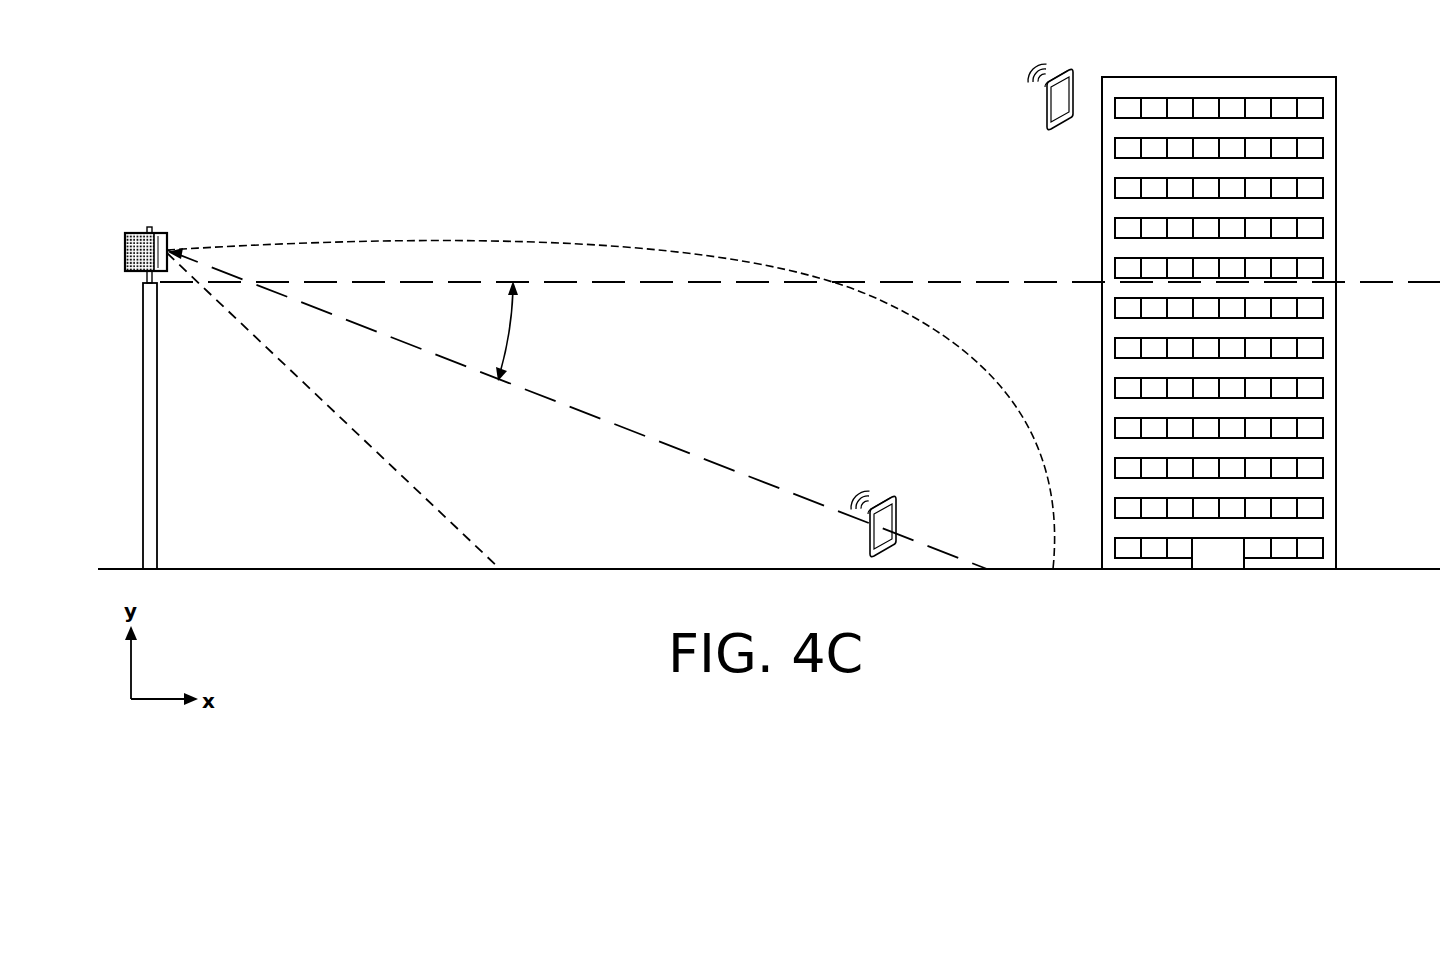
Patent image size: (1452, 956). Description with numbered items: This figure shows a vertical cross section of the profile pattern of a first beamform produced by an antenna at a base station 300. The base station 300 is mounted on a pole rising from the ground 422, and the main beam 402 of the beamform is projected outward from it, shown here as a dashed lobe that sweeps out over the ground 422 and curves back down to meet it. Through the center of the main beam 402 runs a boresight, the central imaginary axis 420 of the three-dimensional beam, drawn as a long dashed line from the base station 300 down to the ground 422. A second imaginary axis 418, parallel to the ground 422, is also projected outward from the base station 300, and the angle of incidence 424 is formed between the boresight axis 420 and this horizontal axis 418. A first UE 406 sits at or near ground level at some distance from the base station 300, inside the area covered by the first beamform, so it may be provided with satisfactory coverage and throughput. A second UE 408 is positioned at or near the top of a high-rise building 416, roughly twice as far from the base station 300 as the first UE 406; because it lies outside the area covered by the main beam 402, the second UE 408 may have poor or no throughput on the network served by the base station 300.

The base station 300 is at (160, 233).
The main beam 402 is at (398, 262).
The first UE 406 is at (870, 538).
The second UE 408 is at (1047, 106).
The high-rise building 416 is at (1278, 77).
The imaginary axis parallel to the ground 418 is at (1375, 282).
The boresight axis 420 is at (935, 548).
The ground 422 is at (1378, 569).
The angle of incidence 424 is at (570, 337).